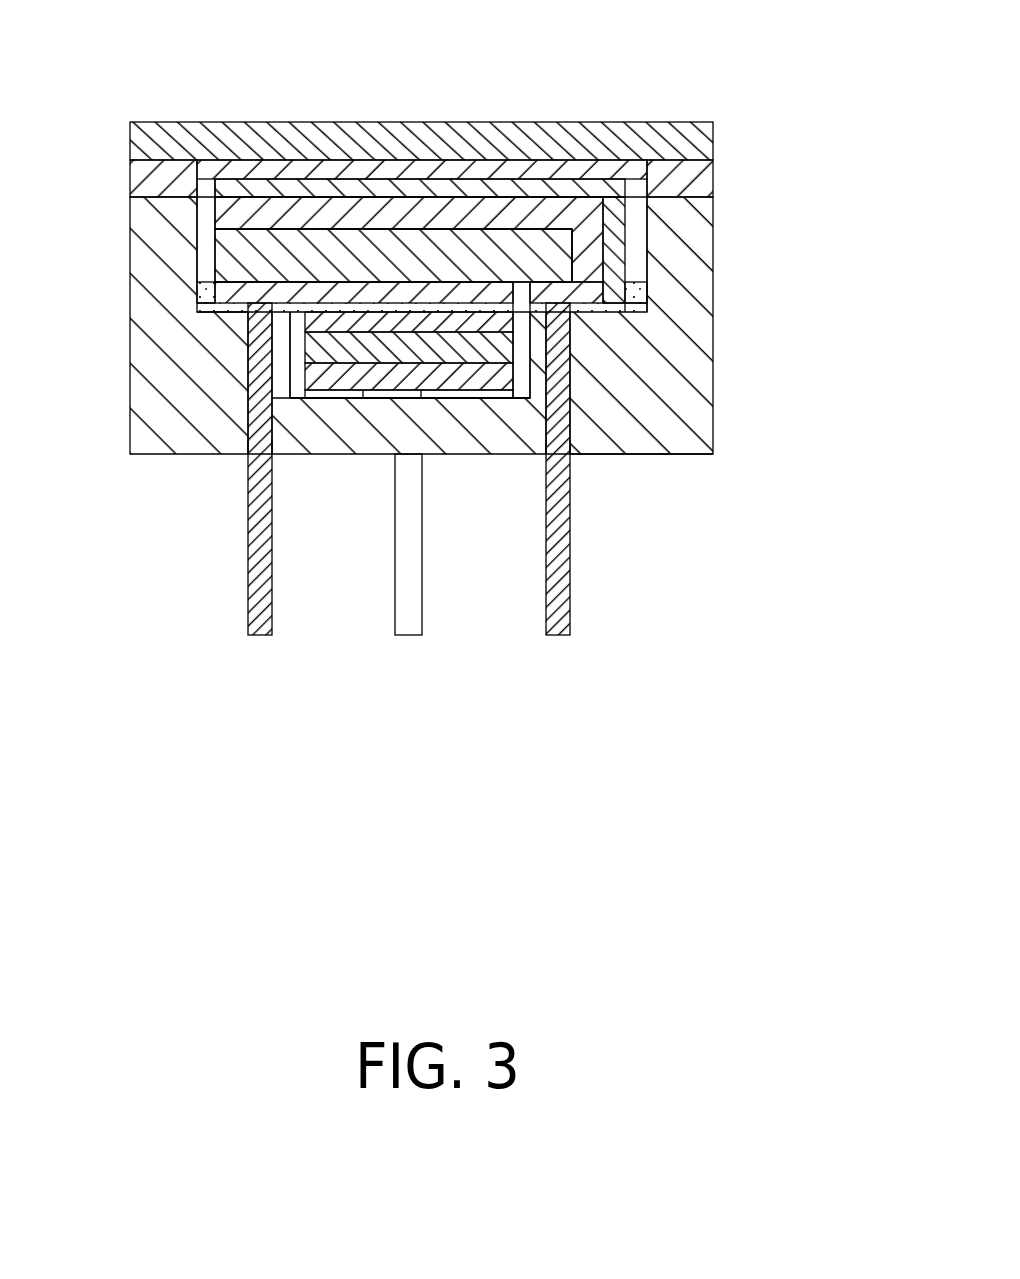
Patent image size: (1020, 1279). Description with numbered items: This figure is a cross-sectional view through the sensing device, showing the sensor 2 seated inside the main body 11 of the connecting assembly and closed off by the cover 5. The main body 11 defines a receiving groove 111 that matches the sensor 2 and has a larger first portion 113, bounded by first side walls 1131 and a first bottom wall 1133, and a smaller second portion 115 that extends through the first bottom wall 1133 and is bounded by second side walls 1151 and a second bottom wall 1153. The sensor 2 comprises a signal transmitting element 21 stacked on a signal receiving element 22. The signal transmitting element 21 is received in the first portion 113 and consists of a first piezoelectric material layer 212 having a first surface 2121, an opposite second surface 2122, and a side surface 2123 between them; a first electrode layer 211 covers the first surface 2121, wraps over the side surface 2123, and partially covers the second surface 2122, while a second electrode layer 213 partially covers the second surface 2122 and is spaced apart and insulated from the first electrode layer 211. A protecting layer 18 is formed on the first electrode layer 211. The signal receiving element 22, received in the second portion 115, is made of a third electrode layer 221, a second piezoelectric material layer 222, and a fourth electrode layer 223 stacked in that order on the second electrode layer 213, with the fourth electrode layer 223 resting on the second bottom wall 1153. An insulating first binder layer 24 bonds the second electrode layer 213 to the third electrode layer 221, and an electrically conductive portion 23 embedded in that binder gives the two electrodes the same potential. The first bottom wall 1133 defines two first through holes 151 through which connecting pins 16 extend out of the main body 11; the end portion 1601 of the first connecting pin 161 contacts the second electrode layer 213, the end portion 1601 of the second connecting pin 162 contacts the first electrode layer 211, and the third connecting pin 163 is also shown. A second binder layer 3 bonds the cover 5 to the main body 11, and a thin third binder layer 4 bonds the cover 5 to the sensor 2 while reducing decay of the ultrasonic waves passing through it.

The sensor 2 is at (551, 222).
The second binder layer 3 is at (688, 173).
The third binder layer 4 is at (516, 172).
The cover 5 is at (670, 135).
The main body 11 is at (713, 454).
The connecting pins 16 is at (391, 574).
The protecting layer 18 is at (612, 227).
The signal transmitting element 21 is at (528, 172).
The signal receiving element 22 is at (576, 377).
The electrically conductive portion 23 is at (417, 308).
The first binder layer 24 is at (300, 307).
The receiving groove 111 is at (216, 232).
The first portion 113 is at (633, 215).
The second portion 115 is at (567, 452).
The first through holes 151 is at (543, 456).
The first connecting pin 161 is at (263, 636).
The second connecting pin 162 is at (406, 636).
The third connecting pin 163 is at (507, 559).
The first electrode layer 211 is at (548, 260).
The first piezoelectric material layer 212 is at (567, 270).
The second electrode layer 213 is at (478, 290).
The third electrode layer 221 is at (500, 322).
The second piezoelectric material layer 222 is at (490, 350).
The fourth electrode layer 223 is at (497, 380).
The first side wall 1131 is at (204, 228).
The first bottom wall 1133 is at (208, 310).
The second side wall 1151 is at (293, 352).
The second bottom wall 1153 is at (320, 408).
The end portion 1601 is at (246, 310).
The first surface 2121 is at (369, 228).
The second surface 2122 is at (325, 280).
The side surface 2123 is at (573, 243).